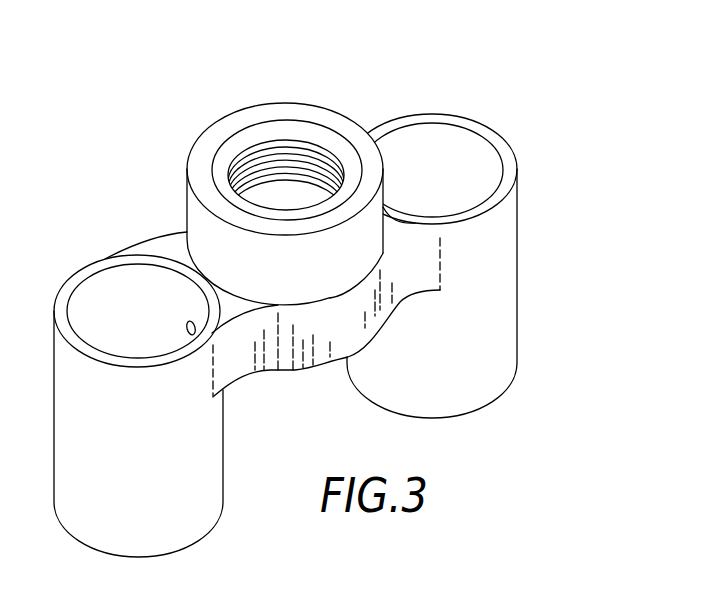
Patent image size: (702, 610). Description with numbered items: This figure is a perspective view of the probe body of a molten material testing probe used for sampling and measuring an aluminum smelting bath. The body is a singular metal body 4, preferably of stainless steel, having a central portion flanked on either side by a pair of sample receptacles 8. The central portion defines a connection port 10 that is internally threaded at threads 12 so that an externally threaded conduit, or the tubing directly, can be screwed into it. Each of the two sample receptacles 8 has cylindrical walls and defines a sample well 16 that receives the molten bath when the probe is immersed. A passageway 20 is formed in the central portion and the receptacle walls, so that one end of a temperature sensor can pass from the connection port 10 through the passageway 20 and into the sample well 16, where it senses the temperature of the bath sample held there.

The metal body 4 is at (307, 315).
The sample receptacles 8 is at (306, 372).
The connection port 10 is at (296, 195).
The internal threads 12 is at (270, 146).
The sample well 16 is at (470, 147).
The passageway 20 is at (187, 330).